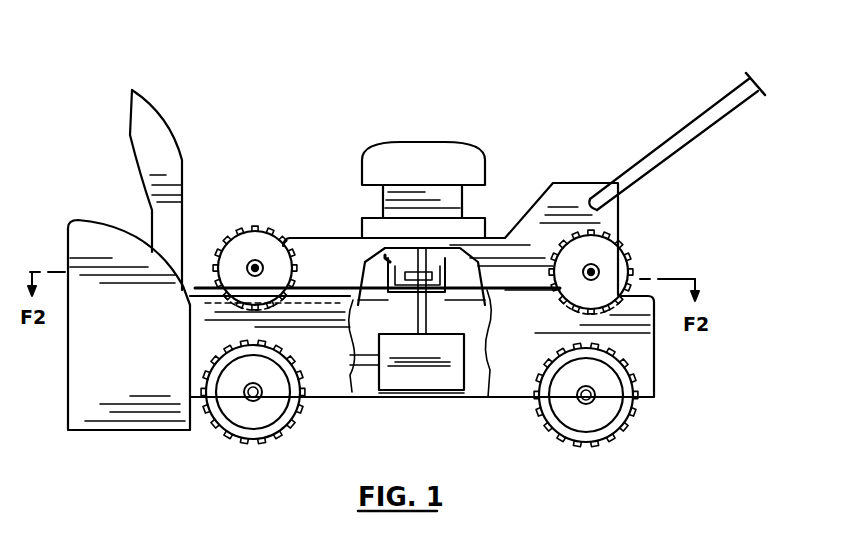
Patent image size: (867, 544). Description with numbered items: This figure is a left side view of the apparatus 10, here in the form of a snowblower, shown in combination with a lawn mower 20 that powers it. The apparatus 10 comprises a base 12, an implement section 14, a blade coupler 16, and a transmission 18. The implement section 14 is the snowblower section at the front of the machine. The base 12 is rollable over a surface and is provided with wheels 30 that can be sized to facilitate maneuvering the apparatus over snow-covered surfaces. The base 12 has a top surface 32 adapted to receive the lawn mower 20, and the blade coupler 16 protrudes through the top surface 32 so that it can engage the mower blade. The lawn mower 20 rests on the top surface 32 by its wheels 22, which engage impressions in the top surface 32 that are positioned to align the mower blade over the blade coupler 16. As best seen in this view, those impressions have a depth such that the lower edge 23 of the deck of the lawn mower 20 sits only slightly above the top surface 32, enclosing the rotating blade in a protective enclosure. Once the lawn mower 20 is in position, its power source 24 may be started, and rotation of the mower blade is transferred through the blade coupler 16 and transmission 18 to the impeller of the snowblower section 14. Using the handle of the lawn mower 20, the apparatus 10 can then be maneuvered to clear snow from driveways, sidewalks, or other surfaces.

The apparatus 10 is at (700, 268).
The base 12 is at (648, 358).
The implement section 14 is at (147, 418).
The blade coupler 16 is at (360, 262).
The transmission 18 is at (360, 383).
The lawn mower 20 is at (563, 195).
The wheels 22 is at (610, 253).
The lower edge 23 is at (518, 296).
The power source 24 is at (450, 158).
The wheels 30 is at (625, 432).
The top surface 32 is at (645, 284).